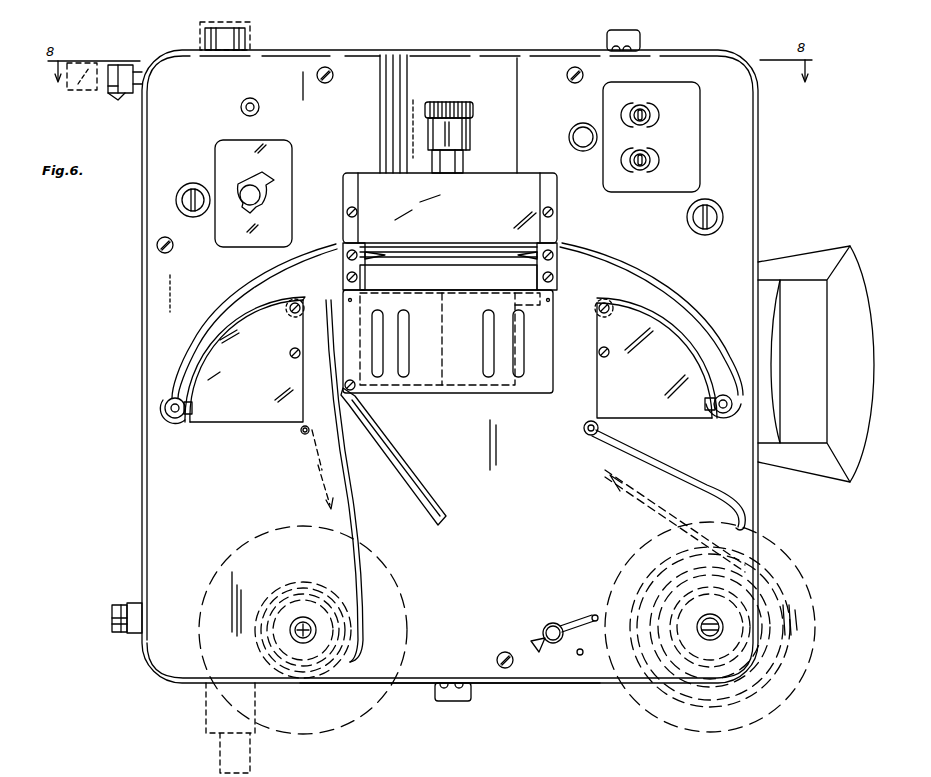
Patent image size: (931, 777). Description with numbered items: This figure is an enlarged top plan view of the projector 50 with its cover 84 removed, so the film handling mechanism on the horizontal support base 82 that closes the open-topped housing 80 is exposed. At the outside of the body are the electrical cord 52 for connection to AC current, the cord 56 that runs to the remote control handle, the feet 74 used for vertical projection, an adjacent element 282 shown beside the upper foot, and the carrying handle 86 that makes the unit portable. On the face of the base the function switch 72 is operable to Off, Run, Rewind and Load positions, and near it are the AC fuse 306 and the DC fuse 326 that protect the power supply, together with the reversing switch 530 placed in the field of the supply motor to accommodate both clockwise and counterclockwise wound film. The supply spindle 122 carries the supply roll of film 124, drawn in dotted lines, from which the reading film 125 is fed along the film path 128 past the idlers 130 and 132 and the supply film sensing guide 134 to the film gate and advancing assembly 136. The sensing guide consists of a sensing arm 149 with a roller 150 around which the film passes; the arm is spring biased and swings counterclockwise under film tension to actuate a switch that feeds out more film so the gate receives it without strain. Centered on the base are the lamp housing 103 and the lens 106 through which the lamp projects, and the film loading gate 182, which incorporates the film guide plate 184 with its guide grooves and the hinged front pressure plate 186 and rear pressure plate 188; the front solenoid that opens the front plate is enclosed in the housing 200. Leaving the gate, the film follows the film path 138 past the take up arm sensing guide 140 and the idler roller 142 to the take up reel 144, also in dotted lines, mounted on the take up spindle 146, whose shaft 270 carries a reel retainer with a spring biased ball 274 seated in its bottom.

The projector 50 is at (118, 533).
The electrical cord 52 is at (256, 40).
The cord 56 is at (217, 757).
The function switch 72 is at (211, 227).
The feet 74 is at (113, 68).
The housing 80 is at (146, 497).
The support base 82 is at (176, 470).
The cover 84 is at (450, 728).
The handle 86 is at (826, 244).
The lamp housing 103 is at (430, 374).
The lens 106 is at (470, 131).
The supply spindle 122 is at (709, 636).
The supply roll of film 124 is at (766, 684).
The reading film 125 is at (656, 496).
The film path 128 is at (675, 470).
The idler 130 is at (600, 428).
The idler 132 is at (603, 301).
The supply film sensing guide 134 is at (731, 395).
The film gate and advancing assembly 136 is at (557, 222).
The film path 138 is at (200, 308).
The take up arm sensing guide 140 is at (167, 420).
The idler roller 142 is at (300, 303).
The take up reel 144 is at (382, 702).
The take up spindle 146 is at (303, 578).
The sensing arm 149 is at (712, 410).
The roller 150 is at (733, 404).
The film loading gate 182 is at (456, 242).
The film guide plate 184 is at (557, 242).
The front pressure plate 186 is at (368, 255).
The rear pressure plate 188 is at (376, 259).
The housing 200 is at (370, 182).
The shaft 270 is at (297, 633).
The spring biased ball 274 is at (303, 618).
The pin 282 is at (124, 95).
The fuse 306 is at (651, 160).
The DC fuse 326 is at (651, 112).
The reversing switch 530 is at (548, 626).